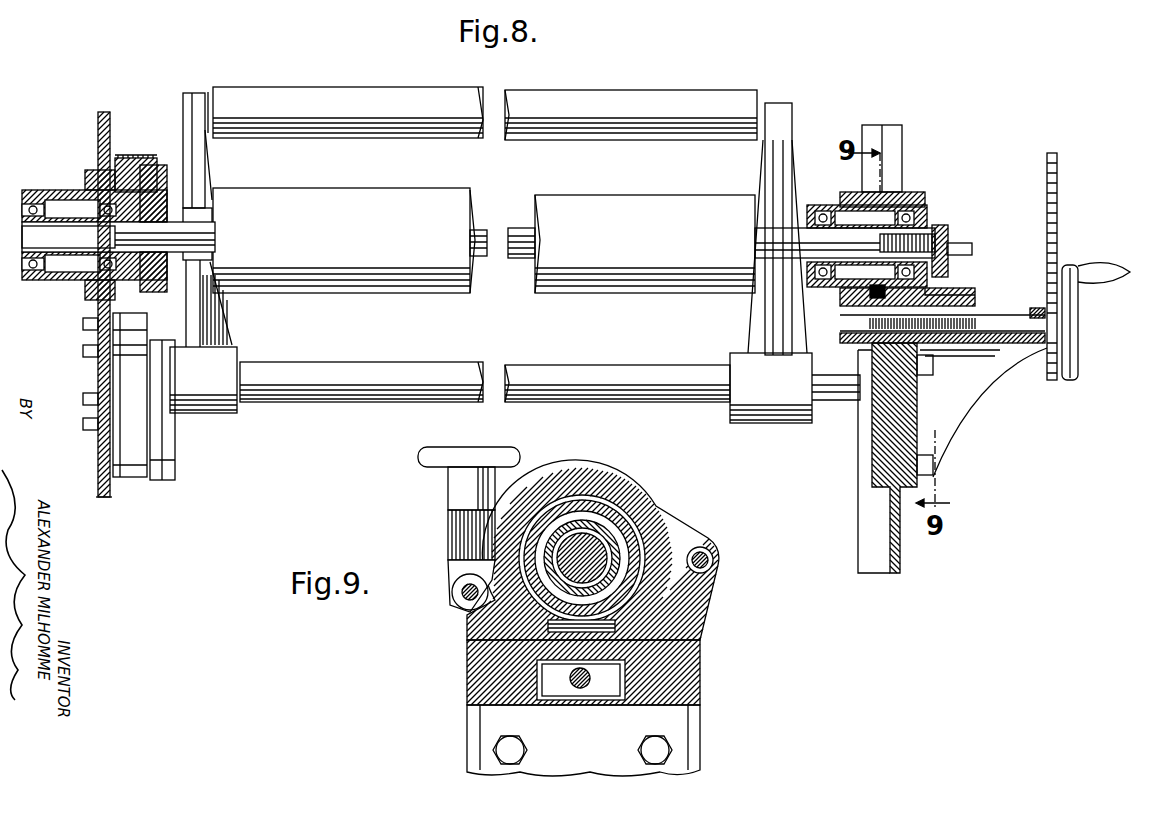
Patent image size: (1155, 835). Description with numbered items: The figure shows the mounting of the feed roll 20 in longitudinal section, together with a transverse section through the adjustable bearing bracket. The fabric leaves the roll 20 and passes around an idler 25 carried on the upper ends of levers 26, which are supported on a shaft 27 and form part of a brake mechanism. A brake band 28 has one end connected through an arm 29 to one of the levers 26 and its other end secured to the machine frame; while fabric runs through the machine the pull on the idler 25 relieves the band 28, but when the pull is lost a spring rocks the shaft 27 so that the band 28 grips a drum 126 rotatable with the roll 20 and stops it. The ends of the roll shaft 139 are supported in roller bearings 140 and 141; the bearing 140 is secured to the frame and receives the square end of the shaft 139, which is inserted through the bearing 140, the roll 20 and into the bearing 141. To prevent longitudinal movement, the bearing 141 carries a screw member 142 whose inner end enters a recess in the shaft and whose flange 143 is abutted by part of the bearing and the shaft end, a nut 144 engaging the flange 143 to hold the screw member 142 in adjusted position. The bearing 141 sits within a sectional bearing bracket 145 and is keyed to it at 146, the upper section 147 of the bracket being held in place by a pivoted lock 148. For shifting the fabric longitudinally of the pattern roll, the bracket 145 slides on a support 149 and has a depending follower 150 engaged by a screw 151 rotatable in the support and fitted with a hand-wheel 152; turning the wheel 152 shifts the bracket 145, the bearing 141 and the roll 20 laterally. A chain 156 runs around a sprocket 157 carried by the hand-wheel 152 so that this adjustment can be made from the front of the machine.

In FIG. 8, the feed roll 20 is at (362, 192).
In FIG. 8, the idler 25 is at (386, 92).
In FIG. 8, the levers 26 is at (205, 312).
In FIG. 8, the shaft 27 is at (485, 363).
In FIG. 8, the brake band 28 is at (132, 160).
In FIG. 8, the arm 29 is at (190, 412).
In FIG. 8, the drum 126 is at (160, 174).
In FIG. 8, the shaft 139 is at (520, 228).
In FIG. 9, the shaft 139 is at (573, 530).
In FIG. 8, the roller bearing 140 is at (70, 190).
In FIG. 8, the roller bearing 141 is at (905, 212).
In FIG. 8, the screw member 142 is at (945, 265).
In FIG. 8, the flange 143 is at (960, 256).
In FIG. 8, the nut 144 is at (942, 238).
In FIG. 8, the sectional bearing bracket 145 is at (872, 340).
In FIG. 9, the sectional bearing bracket 145 is at (645, 618).
In FIG. 8, the key 146 is at (870, 296).
In FIG. 9, the key 146 is at (550, 625).
In FIG. 9, the upper section 147 is at (623, 484).
In FIG. 8, the pivoted lock 148 is at (890, 200).
In FIG. 9, the pivoted lock 148 is at (462, 490).
In FIG. 8, the support 149 is at (1013, 354).
In FIG. 8, the follower 150 is at (960, 301).
In FIG. 8, the screw 151 is at (955, 340).
In FIG. 8, the hand-wheel 152 is at (1062, 332).
In FIG. 8, the chain 156 is at (1062, 207).
In FIG. 8, the sprocket 157 is at (1052, 372).